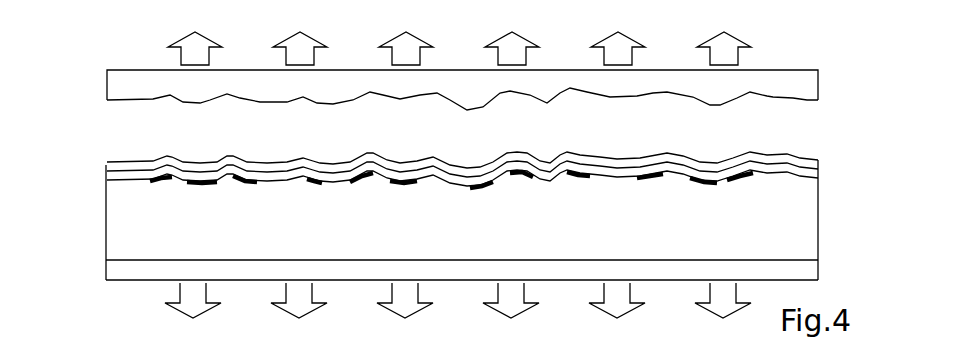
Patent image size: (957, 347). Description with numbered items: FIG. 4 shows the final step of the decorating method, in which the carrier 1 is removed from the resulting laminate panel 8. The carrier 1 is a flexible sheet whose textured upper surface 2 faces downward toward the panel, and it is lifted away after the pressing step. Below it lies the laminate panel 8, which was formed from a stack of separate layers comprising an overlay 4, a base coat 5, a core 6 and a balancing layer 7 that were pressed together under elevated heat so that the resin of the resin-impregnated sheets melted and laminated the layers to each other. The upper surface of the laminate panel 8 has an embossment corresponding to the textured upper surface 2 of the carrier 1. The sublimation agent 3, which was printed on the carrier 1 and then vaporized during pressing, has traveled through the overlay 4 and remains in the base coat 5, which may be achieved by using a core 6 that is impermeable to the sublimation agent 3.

The carrier 1 is at (810, 87).
The textured upper surface 2 is at (772, 97).
The sublimation agent 3 is at (165, 179).
The overlay 4 is at (120, 160).
The base coat 5 is at (110, 175).
The core 6 is at (120, 225).
The balancing layer 7 is at (115, 268).
The laminate panel 8 is at (842, 162).